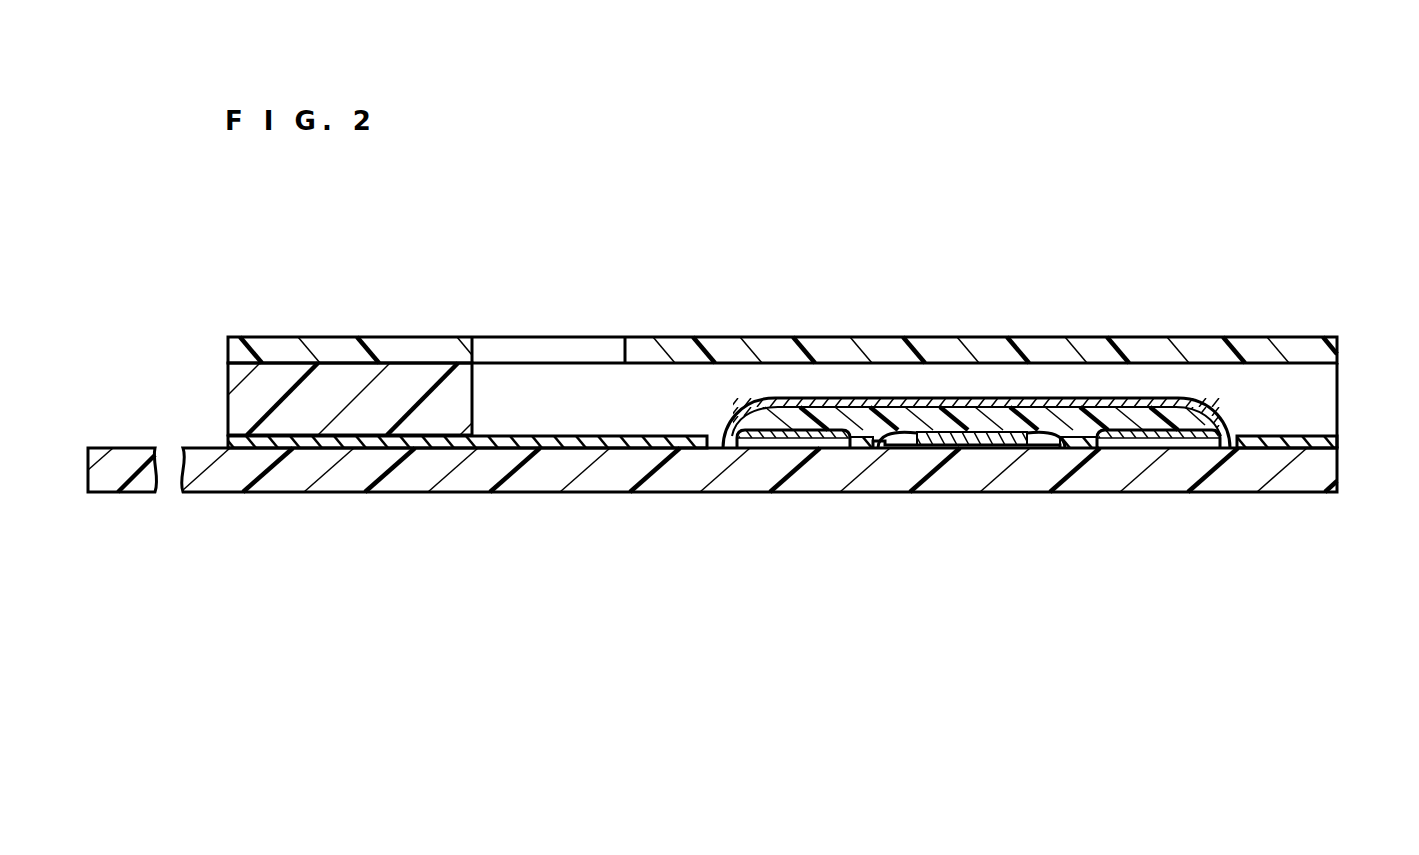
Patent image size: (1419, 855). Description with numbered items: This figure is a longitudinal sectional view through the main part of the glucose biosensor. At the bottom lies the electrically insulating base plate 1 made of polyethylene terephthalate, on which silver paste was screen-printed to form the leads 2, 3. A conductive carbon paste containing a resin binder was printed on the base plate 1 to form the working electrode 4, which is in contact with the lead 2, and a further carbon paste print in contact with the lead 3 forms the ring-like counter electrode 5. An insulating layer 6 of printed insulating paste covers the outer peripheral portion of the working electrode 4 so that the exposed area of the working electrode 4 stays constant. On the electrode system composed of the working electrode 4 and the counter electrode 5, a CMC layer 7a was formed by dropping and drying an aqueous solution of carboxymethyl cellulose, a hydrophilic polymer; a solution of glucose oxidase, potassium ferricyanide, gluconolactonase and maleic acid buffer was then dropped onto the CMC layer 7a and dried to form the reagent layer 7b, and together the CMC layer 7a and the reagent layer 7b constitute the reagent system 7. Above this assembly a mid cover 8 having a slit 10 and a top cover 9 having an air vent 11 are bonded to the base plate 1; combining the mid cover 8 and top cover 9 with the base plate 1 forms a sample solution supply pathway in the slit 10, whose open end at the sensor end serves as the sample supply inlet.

The base plate 1 is at (393, 492).
The lead 2 is at (982, 450).
The lead 3 is at (778, 450).
The working electrode 4 is at (962, 428).
The counter electrode 5 is at (790, 430).
The insulating layer 6 is at (640, 436).
The reagent system 7 is at (745, 398).
The CMC layer 7a is at (1083, 422).
The reagent layer 7b is at (1062, 400).
The mid cover 8 is at (245, 402).
The top cover 9 is at (337, 340).
The slit 10 is at (1317, 405).
The air vent 11 is at (553, 338).